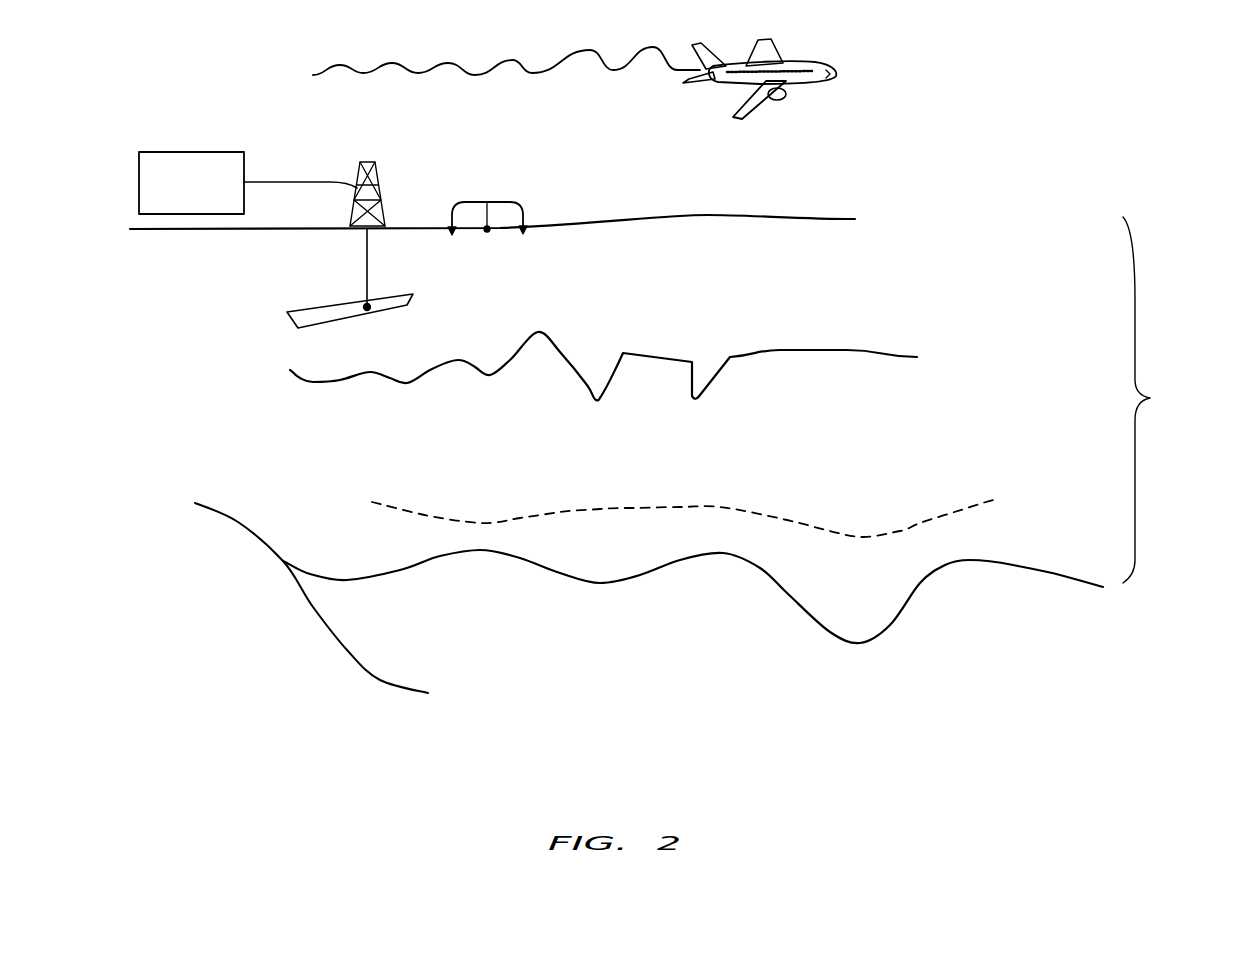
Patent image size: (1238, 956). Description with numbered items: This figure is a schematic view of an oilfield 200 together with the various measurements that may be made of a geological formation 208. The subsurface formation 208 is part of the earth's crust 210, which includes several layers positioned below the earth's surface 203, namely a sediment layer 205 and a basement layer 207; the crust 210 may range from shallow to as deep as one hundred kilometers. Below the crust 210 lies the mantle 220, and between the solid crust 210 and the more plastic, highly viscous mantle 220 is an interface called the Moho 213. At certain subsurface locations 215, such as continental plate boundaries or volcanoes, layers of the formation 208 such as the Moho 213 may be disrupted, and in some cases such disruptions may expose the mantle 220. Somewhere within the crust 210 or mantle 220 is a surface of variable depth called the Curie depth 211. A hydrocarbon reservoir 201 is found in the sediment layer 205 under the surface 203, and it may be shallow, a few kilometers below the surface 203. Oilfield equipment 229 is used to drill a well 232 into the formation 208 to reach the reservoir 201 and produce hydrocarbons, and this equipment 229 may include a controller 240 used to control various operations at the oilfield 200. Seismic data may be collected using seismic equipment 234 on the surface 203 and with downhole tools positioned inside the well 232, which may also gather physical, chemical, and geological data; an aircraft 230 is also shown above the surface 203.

The oilfield 200 is at (963, 80).
The hydrocarbon reservoir 201 is at (290, 312).
The earth's surface 203 is at (825, 220).
The sediment layer 205 is at (868, 290).
The basement layer 207 is at (893, 355).
The geological formation 208 is at (237, 418).
The earth's crust 210 is at (1159, 400).
The Curie depth 211 is at (967, 510).
The Moho 213 is at (1013, 565).
The subsurface locations 215 is at (238, 522).
The mantle 220 is at (1040, 638).
The oilfield equipment 229 is at (357, 170).
The aircraft 230 is at (813, 63).
The well 232 is at (371, 277).
The seismic equipment 234 is at (524, 212).
The controller 240 is at (212, 152).